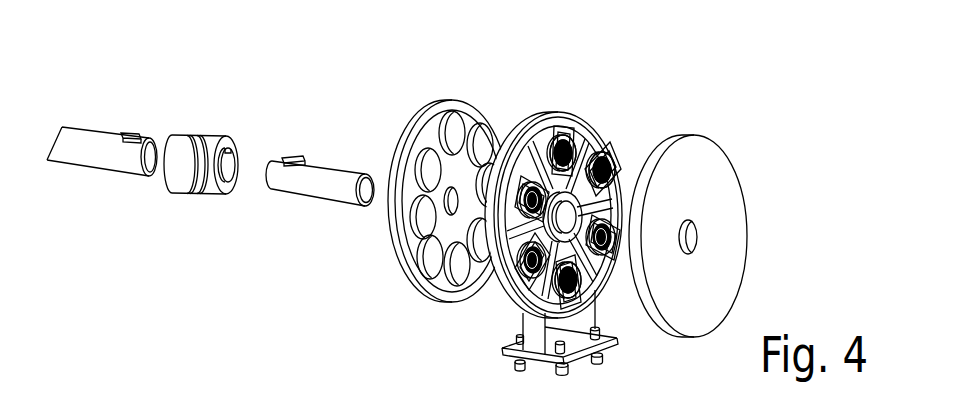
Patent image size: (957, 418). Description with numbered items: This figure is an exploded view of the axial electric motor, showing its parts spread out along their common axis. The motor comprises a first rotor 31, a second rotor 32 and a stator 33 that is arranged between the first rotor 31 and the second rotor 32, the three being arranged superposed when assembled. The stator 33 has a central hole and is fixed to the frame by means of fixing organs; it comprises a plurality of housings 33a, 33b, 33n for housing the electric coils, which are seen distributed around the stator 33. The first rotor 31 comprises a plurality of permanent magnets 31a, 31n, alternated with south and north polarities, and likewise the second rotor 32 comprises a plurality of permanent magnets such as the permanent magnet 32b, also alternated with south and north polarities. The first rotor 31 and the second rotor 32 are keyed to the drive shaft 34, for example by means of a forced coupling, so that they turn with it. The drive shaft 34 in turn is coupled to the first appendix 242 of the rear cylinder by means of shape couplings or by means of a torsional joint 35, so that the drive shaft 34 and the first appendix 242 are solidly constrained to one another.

The first appendix 242 is at (110, 160).
The torsional joint 35 is at (202, 188).
The drive shaft 34 is at (325, 195).
The permanent magnet 32b is at (453, 137).
The first rotor 31 is at (455, 98).
The permanent magnet 31a is at (487, 125).
The permanent magnet 31n is at (483, 250).
The stator 33 is at (592, 128).
The housing 33a is at (608, 157).
The housing 33b is at (562, 147).
The housing 33n is at (614, 287).
The second rotor 32 is at (728, 168).